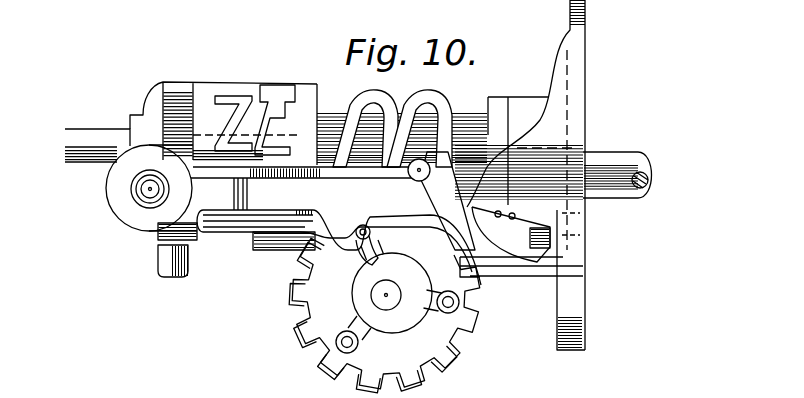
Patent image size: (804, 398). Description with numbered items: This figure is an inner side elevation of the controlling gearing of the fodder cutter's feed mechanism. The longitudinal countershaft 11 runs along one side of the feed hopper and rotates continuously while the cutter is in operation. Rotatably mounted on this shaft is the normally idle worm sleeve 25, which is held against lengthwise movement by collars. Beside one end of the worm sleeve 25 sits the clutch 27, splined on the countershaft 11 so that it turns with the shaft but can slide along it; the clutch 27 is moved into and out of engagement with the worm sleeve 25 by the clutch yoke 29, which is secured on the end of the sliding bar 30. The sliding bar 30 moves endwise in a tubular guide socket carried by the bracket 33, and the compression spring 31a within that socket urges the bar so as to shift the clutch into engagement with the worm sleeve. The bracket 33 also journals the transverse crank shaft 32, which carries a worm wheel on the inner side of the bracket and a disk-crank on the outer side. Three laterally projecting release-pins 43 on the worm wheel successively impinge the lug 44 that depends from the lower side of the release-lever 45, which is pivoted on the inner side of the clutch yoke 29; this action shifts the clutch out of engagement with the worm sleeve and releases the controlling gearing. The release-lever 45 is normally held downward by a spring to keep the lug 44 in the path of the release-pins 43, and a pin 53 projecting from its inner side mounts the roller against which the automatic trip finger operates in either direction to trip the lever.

The longitudinal countershaft 11 is at (100, 137).
The worm sleeve 25 is at (436, 96).
The clutch 27 is at (212, 95).
The clutch yoke 29 is at (177, 88).
The sliding bar 30 is at (230, 234).
The compression spring 31a is at (518, 218).
The transverse crank shaft 32 is at (455, 357).
The bracket 33 is at (558, 105).
The release-pins 43 is at (337, 342).
The lug 44 is at (345, 252).
The release-lever 45 is at (290, 197).
The pin 53 is at (430, 165).